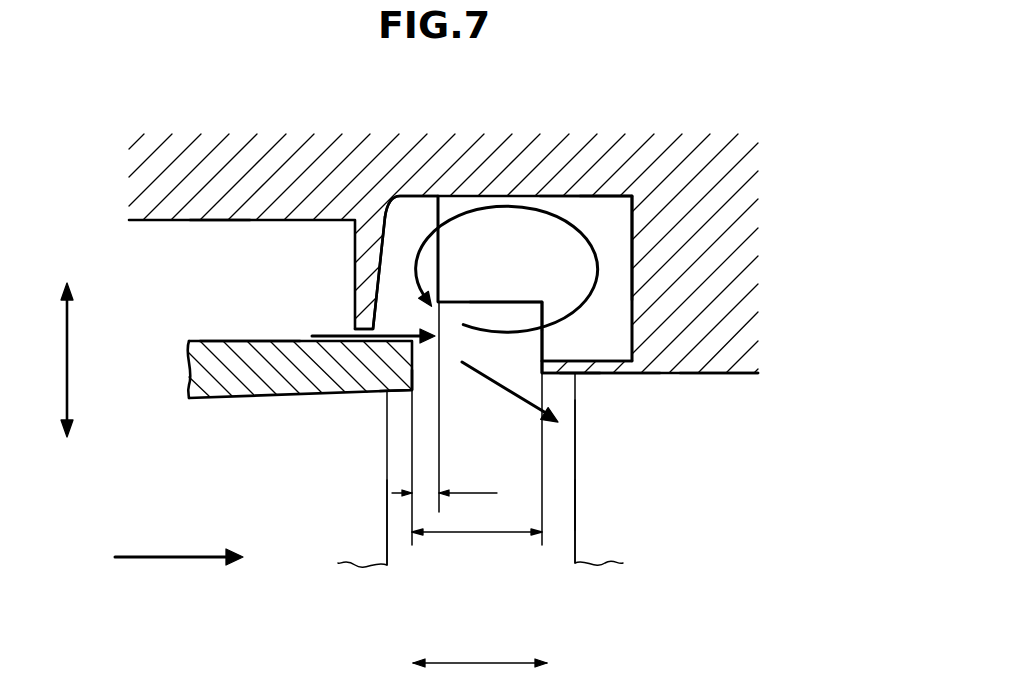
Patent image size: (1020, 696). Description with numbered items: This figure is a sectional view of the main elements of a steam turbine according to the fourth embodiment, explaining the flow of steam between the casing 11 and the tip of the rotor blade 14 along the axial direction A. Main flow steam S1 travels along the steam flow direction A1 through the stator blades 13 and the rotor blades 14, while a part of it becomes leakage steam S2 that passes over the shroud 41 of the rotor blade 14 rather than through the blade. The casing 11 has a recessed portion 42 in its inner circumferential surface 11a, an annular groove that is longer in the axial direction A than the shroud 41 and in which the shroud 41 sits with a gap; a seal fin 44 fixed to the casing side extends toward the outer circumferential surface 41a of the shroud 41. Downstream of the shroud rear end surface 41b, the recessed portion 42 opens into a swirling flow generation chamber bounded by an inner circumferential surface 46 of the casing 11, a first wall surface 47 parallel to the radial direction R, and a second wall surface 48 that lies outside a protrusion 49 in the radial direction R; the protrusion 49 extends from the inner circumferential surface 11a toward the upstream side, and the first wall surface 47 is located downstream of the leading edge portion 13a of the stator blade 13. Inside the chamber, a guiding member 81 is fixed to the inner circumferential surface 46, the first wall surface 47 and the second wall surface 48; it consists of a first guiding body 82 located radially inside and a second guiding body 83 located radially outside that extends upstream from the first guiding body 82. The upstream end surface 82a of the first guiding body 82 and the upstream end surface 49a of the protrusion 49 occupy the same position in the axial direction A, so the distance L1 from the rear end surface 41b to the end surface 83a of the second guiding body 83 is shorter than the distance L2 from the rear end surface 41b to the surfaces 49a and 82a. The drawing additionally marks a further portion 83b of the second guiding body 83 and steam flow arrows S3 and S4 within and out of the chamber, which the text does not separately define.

The casing 11 is at (482, 114).
The inner circumferential surface 11a is at (720, 373).
The stator blade 13 is at (613, 578).
The leading edge portion 13a is at (573, 530).
The rotor blade 14 is at (348, 578).
The shroud 41 is at (213, 368).
The outer circumferential surface 41a is at (225, 341).
The rear end surface 41b is at (411, 388).
The recessed portion 42 is at (218, 220).
The seal fin 44 is at (365, 304).
The inner circumferential surface 46 is at (573, 197).
The first wall surface 47 is at (616, 239).
The second wall surface 48 is at (583, 361).
The protrusion 49 is at (552, 374).
The upstream end surface 49a is at (538, 360).
The guiding member 81 is at (610, 186).
The first guiding body 82 is at (605, 323).
The upstream end surface 82a is at (547, 301).
The second guiding body 83 is at (475, 243).
The end surface 83a is at (410, 197).
The partition downstream end 83b is at (508, 302).
The main flow steam S1 is at (177, 562).
The leakage steam S2 is at (315, 332).
The vortex flow in cavity S3 is at (622, 196).
The outflow from cavity S4 is at (493, 387).
The radial direction R is at (58, 360).
The steam flow direction A1 is at (179, 548).
The distance L1 is at (444, 481).
The distance L2 is at (477, 520).
The axial direction A is at (480, 651).